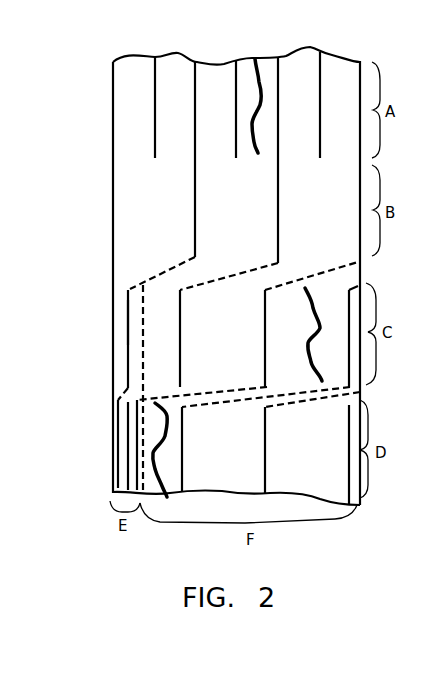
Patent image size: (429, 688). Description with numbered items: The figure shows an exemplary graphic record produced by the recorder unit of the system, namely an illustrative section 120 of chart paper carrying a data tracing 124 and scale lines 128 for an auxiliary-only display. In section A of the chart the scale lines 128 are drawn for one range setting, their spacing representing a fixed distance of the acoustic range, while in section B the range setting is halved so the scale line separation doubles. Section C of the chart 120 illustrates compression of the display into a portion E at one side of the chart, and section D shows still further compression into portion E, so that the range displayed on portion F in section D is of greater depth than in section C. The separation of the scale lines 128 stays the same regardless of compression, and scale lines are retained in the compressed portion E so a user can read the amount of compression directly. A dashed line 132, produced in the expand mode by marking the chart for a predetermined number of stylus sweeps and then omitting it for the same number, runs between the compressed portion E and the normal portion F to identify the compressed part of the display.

The section of chart paper 120 is at (113, 221).
The data tracing 124 is at (260, 81).
The scale lines 128 is at (195, 112).
The dashed line 132 is at (128, 322).